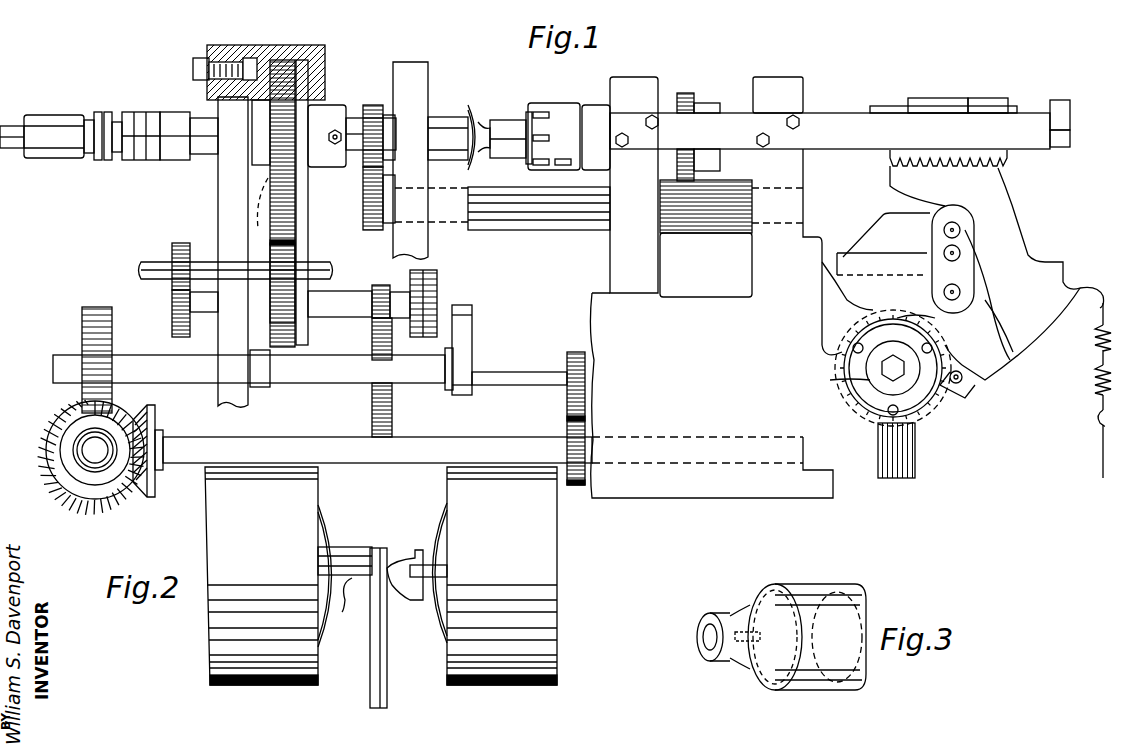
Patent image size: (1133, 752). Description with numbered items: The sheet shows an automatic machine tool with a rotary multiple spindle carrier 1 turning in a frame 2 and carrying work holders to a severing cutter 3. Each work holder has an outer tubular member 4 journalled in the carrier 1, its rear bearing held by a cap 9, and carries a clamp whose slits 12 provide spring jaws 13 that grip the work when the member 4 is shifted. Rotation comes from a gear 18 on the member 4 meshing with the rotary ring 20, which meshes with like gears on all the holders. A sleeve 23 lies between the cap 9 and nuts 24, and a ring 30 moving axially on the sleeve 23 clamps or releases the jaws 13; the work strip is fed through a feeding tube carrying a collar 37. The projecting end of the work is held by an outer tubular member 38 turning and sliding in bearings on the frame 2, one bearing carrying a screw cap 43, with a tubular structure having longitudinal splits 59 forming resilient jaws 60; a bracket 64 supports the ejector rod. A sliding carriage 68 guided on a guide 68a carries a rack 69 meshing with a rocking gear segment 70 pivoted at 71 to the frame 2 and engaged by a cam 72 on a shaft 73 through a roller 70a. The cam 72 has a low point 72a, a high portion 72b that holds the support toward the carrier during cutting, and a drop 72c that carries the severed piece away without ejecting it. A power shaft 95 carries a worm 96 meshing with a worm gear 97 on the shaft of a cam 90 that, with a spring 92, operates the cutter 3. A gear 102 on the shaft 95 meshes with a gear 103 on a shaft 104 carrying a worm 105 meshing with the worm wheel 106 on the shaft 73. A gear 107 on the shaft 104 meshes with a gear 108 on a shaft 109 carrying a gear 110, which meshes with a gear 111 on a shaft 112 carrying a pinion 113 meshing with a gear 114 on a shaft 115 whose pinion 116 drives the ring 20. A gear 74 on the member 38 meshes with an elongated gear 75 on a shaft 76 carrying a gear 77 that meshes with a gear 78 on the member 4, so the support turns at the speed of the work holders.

In FIG. 1, the rotary multiple spindle carrier 1 is at (232, 126).
In FIG. 1, the frame 2 is at (280, 44).
In FIG. 2, the severing cutter 3 is at (386, 658).
In FIG. 1, the outer tubular member 4 is at (356, 118).
In FIG. 2, the outer tubular member 4 is at (276, 475).
In FIG. 1, the cap 9 is at (206, 156).
In FIG. 1, the slits 12 is at (478, 140).
In FIG. 2, the slits 12 is at (344, 605).
In FIG. 1, the spring jaws 13 is at (474, 125).
In FIG. 2, the spring jaws 13 is at (336, 535).
In FIG. 1, the gear 18 is at (263, 206).
In FIG. 1, the rotary ring 20 is at (296, 230).
In FIG. 1, the sleeve 23 is at (176, 112).
In FIG. 1, the nuts 24 is at (99, 160).
In FIG. 1, the ring 30 is at (150, 161).
In FIG. 1, the collar 37 is at (58, 116).
In FIG. 1, the outer tubular member 38 is at (548, 104).
In FIG. 2, the outer tubular member 38 is at (502, 688).
In FIG. 1, the screw cap 43 is at (560, 166).
In FIG. 1, the longitudinal splits 59 is at (492, 150).
In FIG. 2, the longitudinal splits 59 is at (416, 556).
In FIG. 1, the resilient jaws 60 is at (516, 119).
In FIG. 2, the resilient jaws 60 is at (432, 600).
In FIG. 1, the bracket 64 is at (1060, 142).
In FIG. 1, the sliding carriage 68 is at (936, 99).
In FIG. 1, the guide 68a is at (976, 100).
In FIG. 1, the rack 69 is at (905, 152).
In FIG. 1, the rocking gear segment 70 is at (1000, 218).
In FIG. 1, the roller 70a is at (968, 392).
In FIG. 1, the pivot 71 is at (960, 292).
In FIG. 1, the cam 72 is at (870, 320).
In FIG. 1, the low point 72a is at (845, 380).
In FIG. 1, the high portion 72b is at (995, 353).
In FIG. 1, the drop 72c is at (946, 314).
In FIG. 1, the shaft 73 is at (905, 372).
In FIG. 1, the gear 74 is at (686, 92).
In FIG. 1, the gear 75 is at (690, 231).
In FIG. 1, the shaft 76 is at (530, 226).
In FIG. 1, the gear 77 is at (378, 232).
In FIG. 1, the gear 78 is at (372, 170).
In FIG. 1, the cam 90 is at (470, 340).
In FIG. 1, the spring 92 is at (1096, 372).
In FIG. 1, the power shaft 95 is at (82, 450).
In FIG. 1, the worm 96 is at (108, 492).
In FIG. 1, the worm gear 97 is at (94, 306).
In FIG. 1, the gear 102 is at (68, 490).
In FIG. 1, the gear 103 is at (155, 480).
In FIG. 1, the shaft 104 is at (510, 440).
In FIG. 1, the worm 105 is at (895, 478).
In FIG. 1, the worm wheel 106 is at (920, 418).
In FIG. 1, the gear 107 is at (577, 486).
In FIG. 1, the gear 108 is at (575, 352).
In FIG. 1, the shaft 109 is at (528, 378).
In FIG. 1, the gear 110 is at (372, 408).
In FIG. 1, the gear 111 is at (380, 286).
In FIG. 1, the shaft 112 is at (352, 340).
In FIG. 1, the pinion 113 is at (172, 322).
In FIG. 1, the gear 114 is at (181, 242).
In FIG. 1, the shaft 115 is at (138, 266).
In FIG. 1, the pinion 116 is at (296, 250).